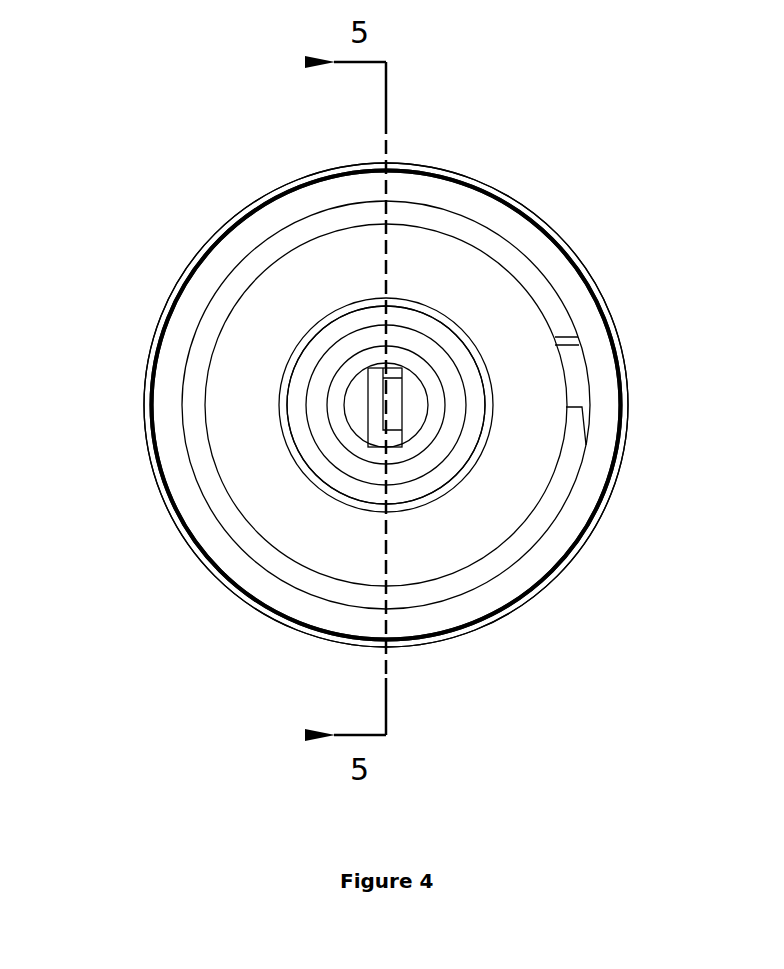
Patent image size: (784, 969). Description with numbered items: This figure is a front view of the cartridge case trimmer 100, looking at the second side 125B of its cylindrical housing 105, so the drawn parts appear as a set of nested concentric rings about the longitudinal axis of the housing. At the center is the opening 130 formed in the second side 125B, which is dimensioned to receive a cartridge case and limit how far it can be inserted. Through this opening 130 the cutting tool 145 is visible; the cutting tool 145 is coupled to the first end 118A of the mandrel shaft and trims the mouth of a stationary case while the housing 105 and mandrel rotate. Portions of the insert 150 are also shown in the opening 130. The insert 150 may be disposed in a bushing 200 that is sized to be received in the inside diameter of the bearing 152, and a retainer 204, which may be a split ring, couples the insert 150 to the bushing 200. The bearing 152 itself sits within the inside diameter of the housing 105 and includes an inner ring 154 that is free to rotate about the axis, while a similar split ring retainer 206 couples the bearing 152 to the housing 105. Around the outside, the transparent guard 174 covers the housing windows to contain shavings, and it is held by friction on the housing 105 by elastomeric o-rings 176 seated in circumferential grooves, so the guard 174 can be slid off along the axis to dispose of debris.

The cartridge case trimmer 100 is at (148, 242).
The cylindrical housing 105 is at (193, 515).
The first end 118A is at (356, 404).
The second side 125B is at (600, 368).
The opening 130 is at (356, 425).
The cutting tool 145 is at (371, 397).
The insert 150 is at (450, 370).
The bearing 152 is at (572, 380).
The inner ring 154 is at (498, 408).
The guard 174 is at (622, 335).
The elastomeric o-rings 176 is at (537, 595).
The bushing 200 is at (455, 345).
The retainer 204 is at (408, 488).
The retainer 206 is at (542, 522).